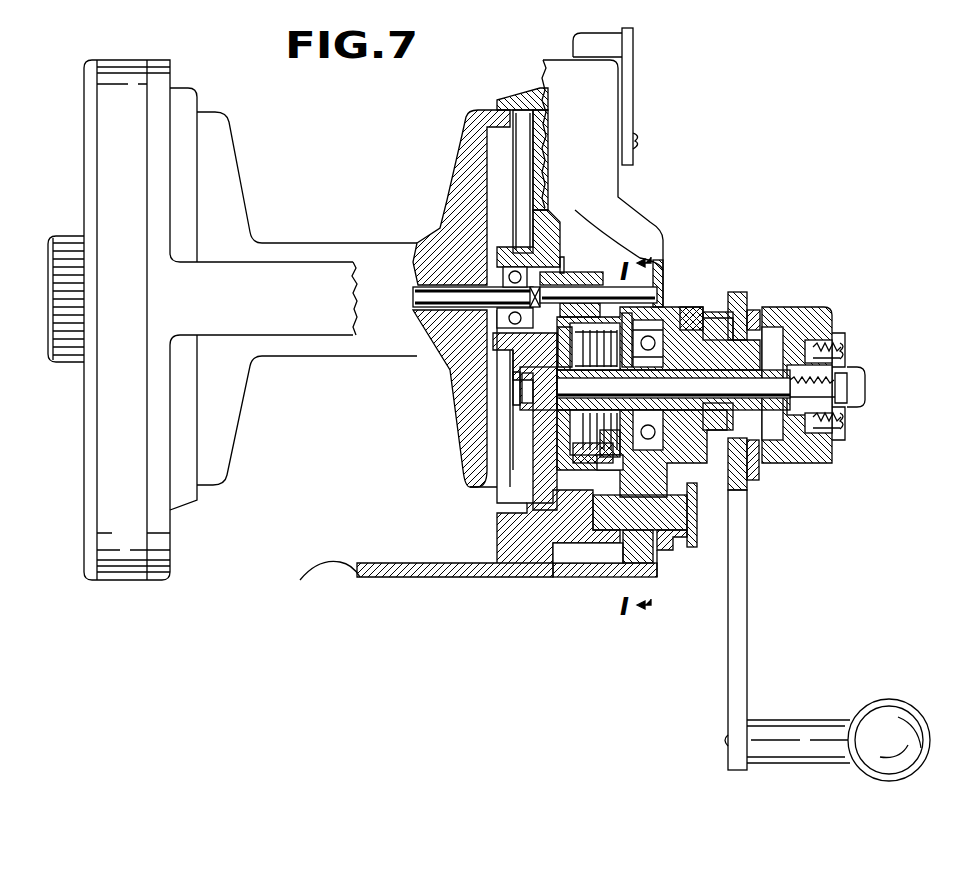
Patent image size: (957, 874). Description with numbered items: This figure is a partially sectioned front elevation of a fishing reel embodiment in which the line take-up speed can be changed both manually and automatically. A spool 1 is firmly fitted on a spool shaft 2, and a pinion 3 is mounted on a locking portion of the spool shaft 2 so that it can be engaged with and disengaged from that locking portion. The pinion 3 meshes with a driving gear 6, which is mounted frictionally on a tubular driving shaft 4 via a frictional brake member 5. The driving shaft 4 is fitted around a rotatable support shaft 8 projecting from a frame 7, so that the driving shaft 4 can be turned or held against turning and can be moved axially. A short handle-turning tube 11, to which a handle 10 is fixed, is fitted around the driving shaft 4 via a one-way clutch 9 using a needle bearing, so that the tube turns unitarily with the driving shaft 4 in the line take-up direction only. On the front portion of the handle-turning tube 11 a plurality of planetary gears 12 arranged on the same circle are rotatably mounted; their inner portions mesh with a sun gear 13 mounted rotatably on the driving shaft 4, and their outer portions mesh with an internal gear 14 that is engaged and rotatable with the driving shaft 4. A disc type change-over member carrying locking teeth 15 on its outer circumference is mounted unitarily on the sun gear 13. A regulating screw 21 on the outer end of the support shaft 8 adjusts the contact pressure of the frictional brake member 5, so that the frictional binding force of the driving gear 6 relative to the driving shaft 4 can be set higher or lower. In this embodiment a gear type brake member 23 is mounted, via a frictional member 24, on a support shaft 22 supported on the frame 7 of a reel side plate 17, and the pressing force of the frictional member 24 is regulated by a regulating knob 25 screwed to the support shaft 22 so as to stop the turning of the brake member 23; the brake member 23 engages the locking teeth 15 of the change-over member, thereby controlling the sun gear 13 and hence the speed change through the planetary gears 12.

The spool 1 is at (467, 121).
The spool shaft 2 is at (428, 290).
The pinion 3 is at (580, 225).
The tubular driving shaft 4 is at (752, 307).
The frictional brake member 5 is at (560, 434).
The driving gear 6 is at (587, 457).
The frame 7 is at (540, 454).
The rotatable support shaft 8 is at (567, 389).
The one-way clutch 9 is at (709, 305).
The handle 10 is at (740, 676).
The handle-turning tube 11 is at (757, 458).
The planetary gears 12 is at (670, 308).
The sun gear 13 is at (622, 442).
The internal gear 14 is at (688, 311).
The locking teeth 15 is at (612, 287).
The reel side plate 17 is at (552, 64).
The regulating screw 21 is at (800, 306).
The support shaft 22 is at (667, 510).
The gear type brake member 23 is at (620, 574).
The frictional member 24 is at (648, 566).
The regulating knob 25 is at (693, 549).